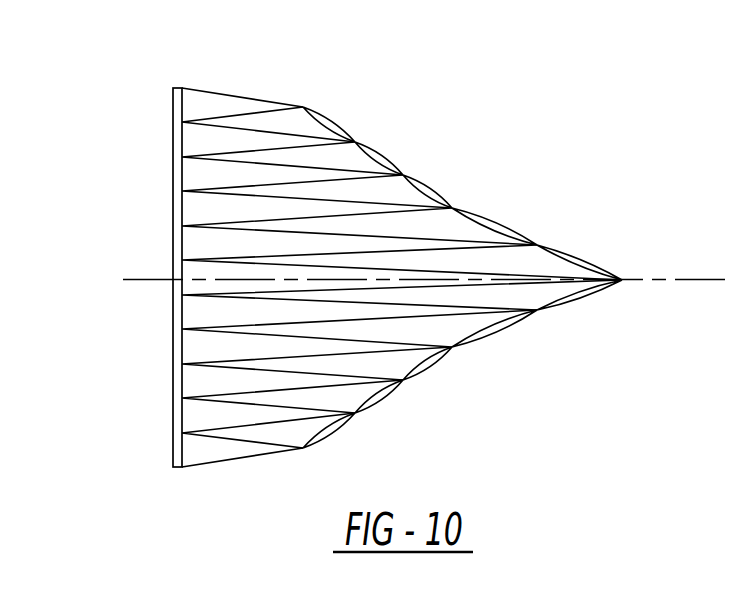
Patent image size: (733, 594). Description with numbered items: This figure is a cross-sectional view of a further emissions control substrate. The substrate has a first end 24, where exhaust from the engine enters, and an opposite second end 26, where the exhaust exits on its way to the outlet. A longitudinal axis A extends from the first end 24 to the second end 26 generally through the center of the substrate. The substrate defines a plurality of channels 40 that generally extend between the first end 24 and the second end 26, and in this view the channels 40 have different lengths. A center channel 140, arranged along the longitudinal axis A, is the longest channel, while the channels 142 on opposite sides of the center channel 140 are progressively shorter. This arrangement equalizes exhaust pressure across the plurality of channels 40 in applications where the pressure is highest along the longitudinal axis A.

The first end 24 is at (173, 89).
The second end 26 is at (623, 280).
The plurality of channels 40 is at (357, 70).
The center channel 140 is at (197, 287).
The channels 142 is at (193, 412).
The longitudinal axis A is at (693, 280).